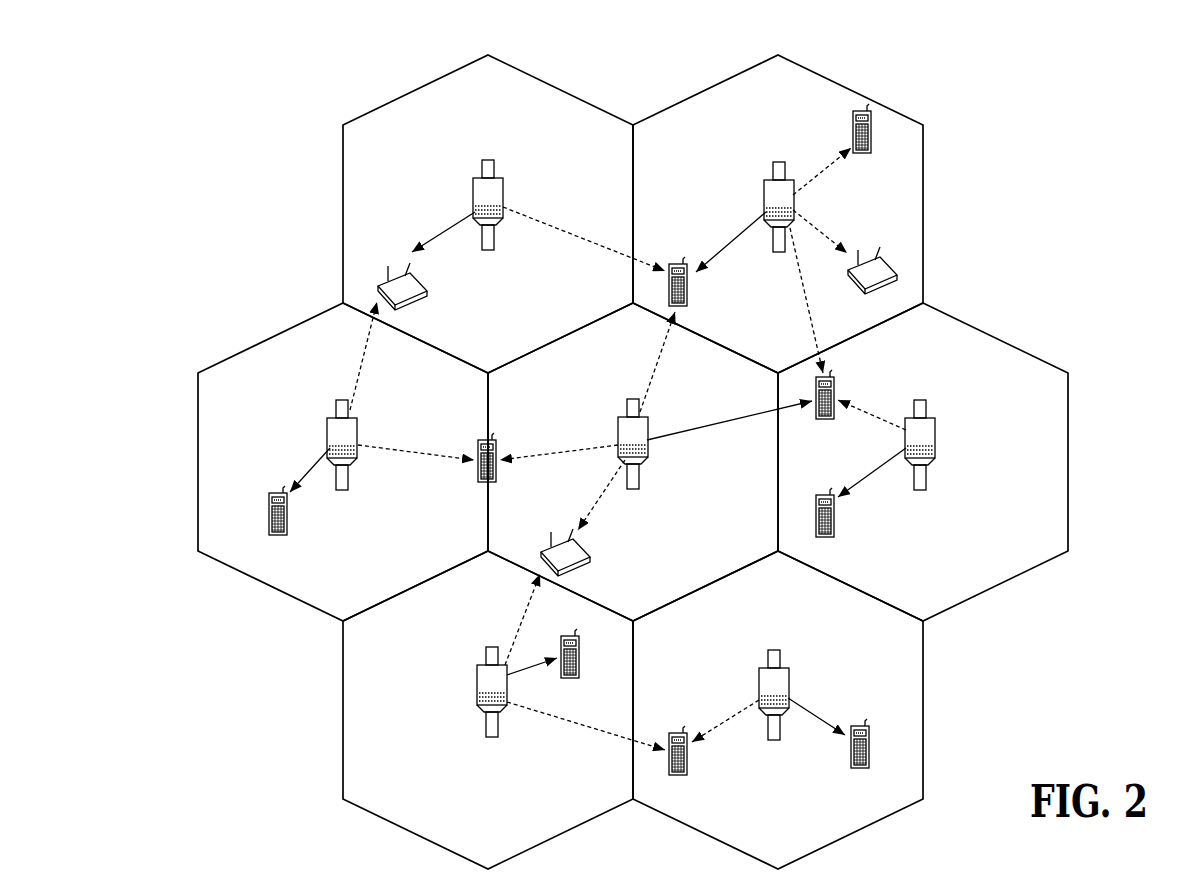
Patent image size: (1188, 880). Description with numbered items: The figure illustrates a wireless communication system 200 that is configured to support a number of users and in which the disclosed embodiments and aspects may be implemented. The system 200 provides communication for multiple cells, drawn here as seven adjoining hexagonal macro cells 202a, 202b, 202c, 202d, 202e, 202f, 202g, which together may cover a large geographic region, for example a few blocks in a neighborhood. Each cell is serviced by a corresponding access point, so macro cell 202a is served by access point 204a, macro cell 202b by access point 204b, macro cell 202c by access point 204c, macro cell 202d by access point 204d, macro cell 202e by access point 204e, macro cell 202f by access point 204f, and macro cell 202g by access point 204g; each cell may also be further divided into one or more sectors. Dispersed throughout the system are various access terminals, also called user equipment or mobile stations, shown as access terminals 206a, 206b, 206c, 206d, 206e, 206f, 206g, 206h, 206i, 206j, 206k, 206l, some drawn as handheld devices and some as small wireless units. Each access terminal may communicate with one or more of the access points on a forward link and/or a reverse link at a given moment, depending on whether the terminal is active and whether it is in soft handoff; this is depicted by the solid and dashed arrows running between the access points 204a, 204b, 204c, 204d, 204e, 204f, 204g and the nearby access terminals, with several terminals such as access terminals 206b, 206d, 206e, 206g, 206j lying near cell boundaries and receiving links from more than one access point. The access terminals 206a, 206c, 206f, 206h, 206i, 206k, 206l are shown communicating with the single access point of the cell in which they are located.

The wireless communication system 200 is at (348, 78).
The macro cell 202a is at (417, 88).
The macro cell 202b is at (839, 86).
The macro cell 202c is at (288, 330).
The macro cell 202d is at (653, 347).
The macro cell 202e is at (976, 329).
The macro cell 202f is at (341, 716).
The macro cell 202g is at (925, 717).
The access point 204a is at (470, 186).
The access point 204b is at (763, 184).
The access point 204c is at (327, 414).
The access point 204d is at (618, 424).
The access point 204e is at (936, 424).
The access point 204f is at (477, 672).
The access point 204g is at (757, 674).
The access terminal 206a is at (424, 280).
The access terminal 206b is at (668, 266).
The access terminal 206c is at (266, 512).
The access terminal 206d is at (470, 452).
The access terminal 206e is at (838, 390).
The access terminal 206f is at (562, 635).
The access terminal 206g is at (670, 733).
The access terminal 206h is at (865, 256).
The access terminal 206i is at (852, 122).
The access terminal 206j is at (586, 546).
The access terminal 206k is at (818, 495).
The access terminal 206l is at (856, 727).